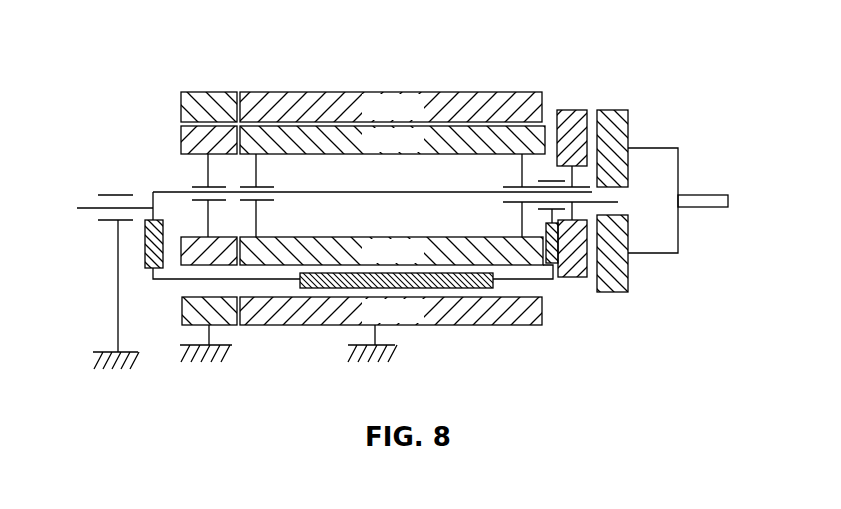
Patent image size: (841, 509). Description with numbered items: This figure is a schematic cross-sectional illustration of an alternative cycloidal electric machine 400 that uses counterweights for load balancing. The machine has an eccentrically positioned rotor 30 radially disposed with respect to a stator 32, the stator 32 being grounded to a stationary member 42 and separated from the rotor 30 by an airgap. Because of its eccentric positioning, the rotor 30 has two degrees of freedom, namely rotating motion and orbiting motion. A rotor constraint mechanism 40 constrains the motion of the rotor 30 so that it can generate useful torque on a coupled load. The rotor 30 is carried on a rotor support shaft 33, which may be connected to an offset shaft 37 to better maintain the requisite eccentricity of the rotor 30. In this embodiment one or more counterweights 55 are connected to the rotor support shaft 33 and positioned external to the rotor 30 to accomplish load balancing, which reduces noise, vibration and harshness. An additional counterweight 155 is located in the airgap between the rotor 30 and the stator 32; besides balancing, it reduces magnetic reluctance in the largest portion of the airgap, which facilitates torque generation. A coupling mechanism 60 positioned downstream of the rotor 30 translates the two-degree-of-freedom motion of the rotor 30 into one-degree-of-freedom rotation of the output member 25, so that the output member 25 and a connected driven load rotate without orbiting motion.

The electric machine 400 is at (646, 23).
The rotor constraint mechanism 40 is at (237, 83).
The stator 32 is at (460, 92).
The rotor 30 is at (450, 155).
The rotor support shaft 33 is at (160, 191).
The offset shaft 37 is at (117, 285).
The counterweight 55 is at (152, 272).
The counterweight 155 is at (493, 287).
The stationary member 42 is at (82, 363).
The coupling mechanism 60 is at (628, 107).
The output member 25 is at (703, 194).